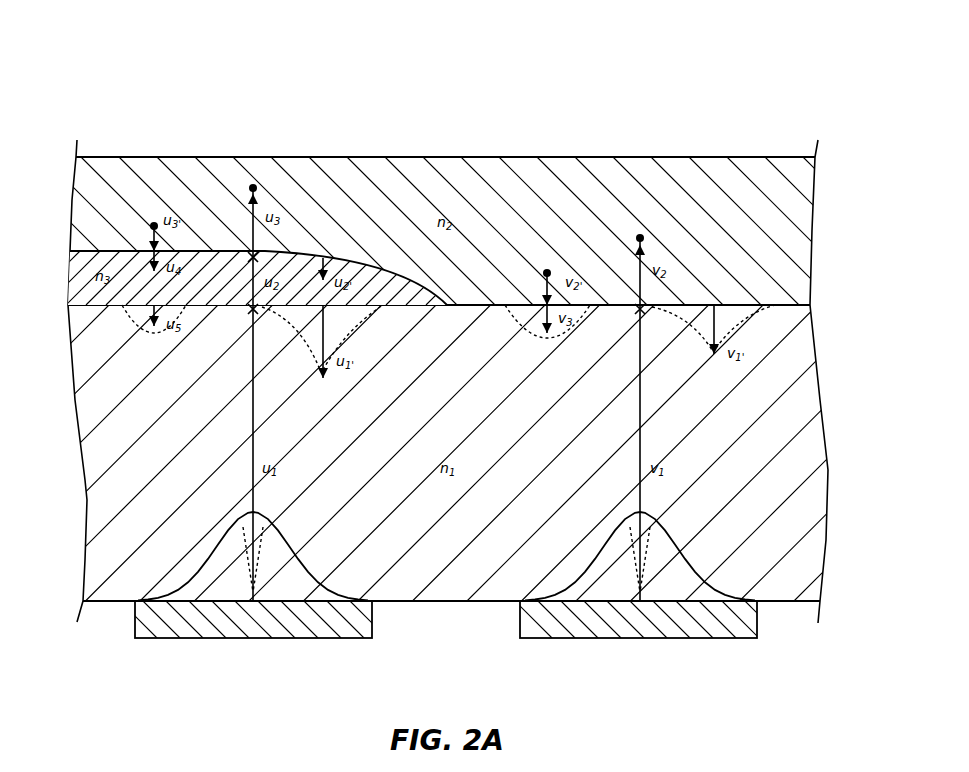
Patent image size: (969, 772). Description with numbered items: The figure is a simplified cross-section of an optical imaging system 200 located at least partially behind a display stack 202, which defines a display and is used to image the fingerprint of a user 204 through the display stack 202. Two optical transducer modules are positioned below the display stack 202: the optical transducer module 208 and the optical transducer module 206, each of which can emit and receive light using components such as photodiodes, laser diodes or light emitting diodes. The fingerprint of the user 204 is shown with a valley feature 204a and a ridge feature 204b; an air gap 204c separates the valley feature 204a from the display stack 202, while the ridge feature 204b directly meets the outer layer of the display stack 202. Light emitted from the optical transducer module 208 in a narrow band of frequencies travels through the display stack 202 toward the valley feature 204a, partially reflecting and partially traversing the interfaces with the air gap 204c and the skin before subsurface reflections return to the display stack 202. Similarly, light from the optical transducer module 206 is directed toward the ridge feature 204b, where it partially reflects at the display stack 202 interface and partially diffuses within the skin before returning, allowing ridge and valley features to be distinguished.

The optical imaging system 200 is at (102, 52).
The display stack 202 is at (828, 470).
The user 204 is at (810, 232).
The valley feature 204a is at (90, 122).
The ridge feature 204b is at (810, 122).
The air gap 204c is at (65, 251).
The optical transducer module 206 is at (645, 640).
The optical transducer module 208 is at (258, 640).